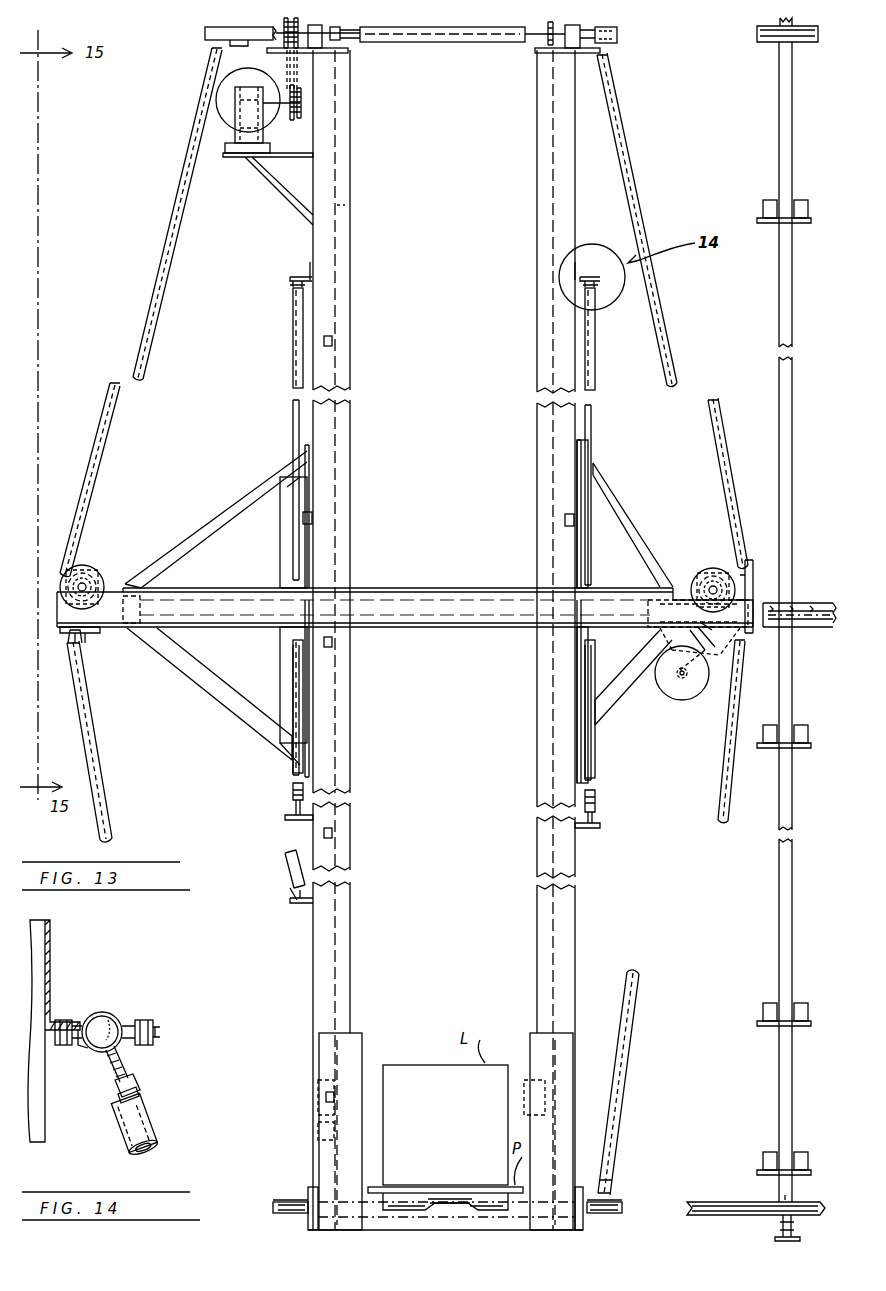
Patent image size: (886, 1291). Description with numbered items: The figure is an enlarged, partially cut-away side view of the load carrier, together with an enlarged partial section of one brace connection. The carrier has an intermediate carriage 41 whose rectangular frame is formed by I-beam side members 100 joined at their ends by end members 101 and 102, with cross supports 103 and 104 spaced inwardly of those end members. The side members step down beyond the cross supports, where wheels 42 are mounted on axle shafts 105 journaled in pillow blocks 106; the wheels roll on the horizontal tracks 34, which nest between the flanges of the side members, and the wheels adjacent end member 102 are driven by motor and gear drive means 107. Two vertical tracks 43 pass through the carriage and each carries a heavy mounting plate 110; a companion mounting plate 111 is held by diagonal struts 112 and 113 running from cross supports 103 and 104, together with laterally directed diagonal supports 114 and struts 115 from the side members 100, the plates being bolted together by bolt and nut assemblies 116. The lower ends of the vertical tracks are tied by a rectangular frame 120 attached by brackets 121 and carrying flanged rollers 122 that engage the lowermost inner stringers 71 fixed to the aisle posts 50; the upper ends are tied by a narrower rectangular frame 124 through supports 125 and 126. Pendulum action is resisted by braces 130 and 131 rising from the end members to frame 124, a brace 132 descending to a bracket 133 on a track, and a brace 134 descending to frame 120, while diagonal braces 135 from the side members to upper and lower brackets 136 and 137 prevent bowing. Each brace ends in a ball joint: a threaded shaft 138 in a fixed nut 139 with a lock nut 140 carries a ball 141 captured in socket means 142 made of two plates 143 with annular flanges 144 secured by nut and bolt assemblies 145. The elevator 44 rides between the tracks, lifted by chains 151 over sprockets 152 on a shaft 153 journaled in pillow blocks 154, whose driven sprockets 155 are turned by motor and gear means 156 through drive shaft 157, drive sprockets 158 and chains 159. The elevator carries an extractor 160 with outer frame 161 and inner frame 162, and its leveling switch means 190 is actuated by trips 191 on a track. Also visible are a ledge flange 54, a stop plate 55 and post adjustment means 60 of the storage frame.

In FIG. 13, the tracks 34 is at (828, 628).
In FIG. 13, the carriage 41 is at (648, 587).
In FIG. 13, the wheels 42 is at (100, 578).
In FIG. 13, the vertical tracks 43 is at (350, 272).
In FIG. 13, the elevator 44 is at (390, 1047).
In FIG. 13, the aisle post 50 is at (779, 105).
In FIG. 13, the horizontally disposed flange 54 is at (790, 224).
In FIG. 13, the stop plate 55 is at (802, 200).
In FIG. 13, the vertical adjustment means 60 is at (768, 1232).
In FIG. 13, the inner stringers 71 is at (757, 34).
In FIG. 13, the side members 100 is at (450, 628).
In FIG. 13, the end member 101 is at (83, 625).
In FIG. 13, the end member 102 is at (760, 605).
In FIG. 13, the cross support 103 is at (145, 607).
In FIG. 13, the cross support 104 is at (660, 612).
In FIG. 13, the axle shafts 105 is at (70, 565).
In FIG. 13, the pillow blocks 106 is at (84, 580).
In FIG. 13, the motor and gear drive means 107 is at (697, 675).
In FIG. 13, the mounting plate 110 is at (312, 456).
In FIG. 13, the mounting plate 111 is at (298, 462).
In FIG. 13, the diagonal struts 112 is at (210, 525).
In FIG. 13, the diagonal struts 113 is at (628, 527).
In FIG. 13, the laterally directed diagonal supports 114 is at (280, 554).
In FIG. 13, the laterally directed diagonal struts 115 is at (577, 553).
In FIG. 13, the bolt and nut assemblies 116 is at (312, 518).
In FIG. 13, the rectangular frame 120 is at (620, 1202).
In FIG. 13, the brackets 121 is at (308, 1226).
In FIG. 13, the flanged rollers 122 is at (288, 1202).
In FIG. 13, the rectangular frame 124 is at (210, 28).
In FIG. 13, the bracket or support 125 is at (305, 53).
In FIG. 13, the bracket or support 126 is at (540, 54).
In FIG. 13, the brace 130 is at (182, 169).
In FIG. 13, the brace 131 is at (628, 178).
In FIG. 13, the brace 132 is at (95, 715).
In FIG. 13, the bracket 133 is at (300, 902).
In FIG. 13, the brace 134 is at (724, 792).
In FIG. 13, the diagonal braces 135 is at (293, 344).
In FIG. 14, the diagonal braces 135 is at (143, 1117).
In FIG. 13, the upper bracket 136 is at (300, 275).
In FIG. 14, the upper bracket 136 is at (52, 948).
In FIG. 13, the lower bracket 137 is at (290, 819).
In FIG. 14, the threaded shaft 138 is at (125, 1063).
In FIG. 14, the fixed nut 139 is at (118, 1100).
In FIG. 14, the lock nut 140 is at (138, 1084).
In FIG. 14, the ball 141 is at (103, 1015).
In FIG. 14, the socket means 142 is at (160, 1032).
In FIG. 14, the plates 143 is at (80, 1046).
In FIG. 14, the annular flanges 144 is at (66, 1018).
In FIG. 14, the nut and bolt assemblies 145 is at (143, 1018).
In FIG. 13, the chains 151 is at (345, 211).
In FIG. 13, the sprockets 152 is at (345, 30).
In FIG. 13, the shaft 153 is at (515, 28).
In FIG. 13, the pillow blocks 154 is at (322, 40).
In FIG. 13, the driven sprockets 155 is at (283, 40).
In FIG. 13, the motor and gear means 156 is at (215, 99).
In FIG. 13, the drive shaft 157 is at (300, 107).
In FIG. 13, the drive sprockets 158 is at (301, 115).
In FIG. 13, the chains 159 is at (290, 80).
In FIG. 13, the extractor 160 is at (420, 1177).
In FIG. 13, the outer, upper frame 161 is at (478, 1195).
In FIG. 13, the inner, lower frame 162 is at (448, 1198).
In FIG. 13, the leveling switch means 190 is at (318, 1130).
In FIG. 13, the trips 191 is at (332, 340).